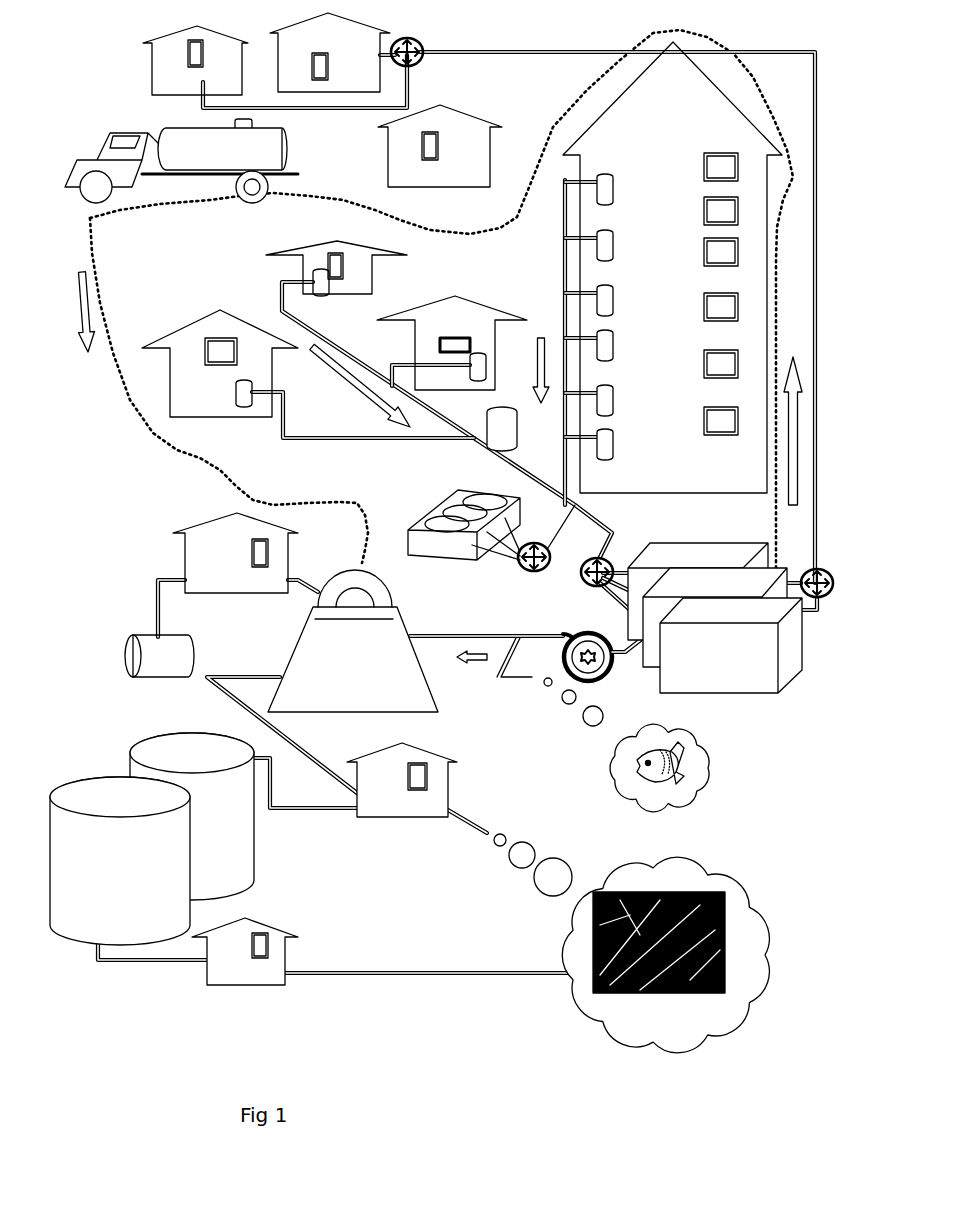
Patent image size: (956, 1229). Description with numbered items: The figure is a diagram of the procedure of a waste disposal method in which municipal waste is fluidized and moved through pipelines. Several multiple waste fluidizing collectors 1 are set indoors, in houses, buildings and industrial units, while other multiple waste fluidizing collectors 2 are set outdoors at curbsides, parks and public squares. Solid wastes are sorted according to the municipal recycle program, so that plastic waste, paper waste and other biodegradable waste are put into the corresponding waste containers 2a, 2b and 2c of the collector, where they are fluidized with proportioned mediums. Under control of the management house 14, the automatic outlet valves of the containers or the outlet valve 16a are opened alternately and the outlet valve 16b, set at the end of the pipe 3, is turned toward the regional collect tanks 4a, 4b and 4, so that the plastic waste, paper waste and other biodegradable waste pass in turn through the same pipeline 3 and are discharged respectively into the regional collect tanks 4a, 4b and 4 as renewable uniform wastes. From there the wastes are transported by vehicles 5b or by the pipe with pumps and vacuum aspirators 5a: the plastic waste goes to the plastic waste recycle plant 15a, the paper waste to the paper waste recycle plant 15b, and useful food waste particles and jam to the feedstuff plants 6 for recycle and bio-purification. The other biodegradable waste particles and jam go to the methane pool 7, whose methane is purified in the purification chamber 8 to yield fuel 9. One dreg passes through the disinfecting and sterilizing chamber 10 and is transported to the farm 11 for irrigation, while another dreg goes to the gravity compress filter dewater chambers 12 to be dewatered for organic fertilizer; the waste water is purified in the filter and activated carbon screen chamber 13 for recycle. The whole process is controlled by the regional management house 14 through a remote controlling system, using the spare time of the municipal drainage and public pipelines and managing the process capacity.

The multiple waste fluidizing collector 1 is at (590, 255).
The multiple waste fluidizing collector 2 is at (519, 437).
The waste container 2a is at (433, 528).
The waste container 2b is at (455, 525).
The waste container 2c is at (470, 513).
The pipe 3 is at (280, 293).
The regional collect tank 4 is at (738, 558).
The regional collect tank 4a is at (692, 623).
The regional collect tank 4b is at (722, 585).
The pipe with pumps and vacuum aspirators 5a is at (563, 633).
The vehicle 5b is at (181, 154).
The feedstuff plant 6 is at (630, 782).
The methane pool 7 is at (300, 663).
The purification chamber 8 is at (237, 561).
The fuel 9 is at (128, 648).
The disinfecting and sterilizing chamber 10 is at (427, 803).
The farm 11 is at (582, 958).
The dewater chamber 12 is at (158, 747).
The filter and activated carbon screen chamber 13 is at (268, 970).
The management house 14 is at (470, 165).
The plastic waste recycle plant 15a is at (358, 40).
The paper waste recycle plant 15b is at (173, 67).
The outlet valve 16a is at (530, 573).
The outlet valve 16b is at (423, 62).